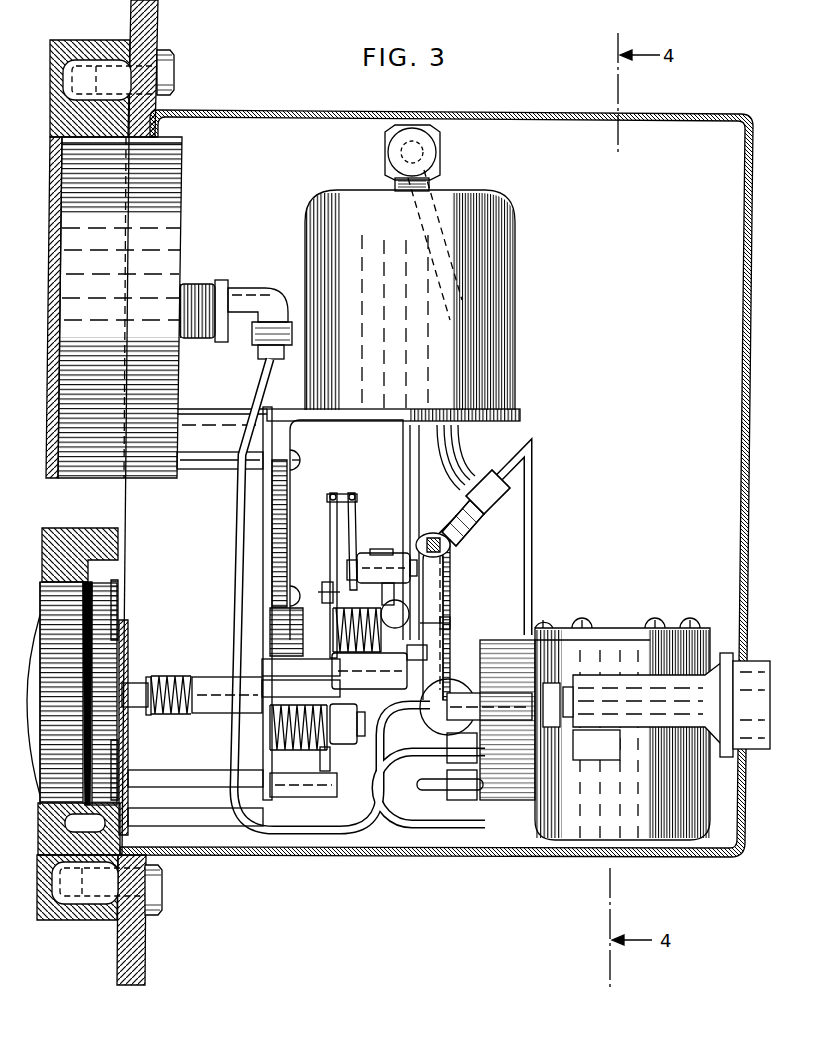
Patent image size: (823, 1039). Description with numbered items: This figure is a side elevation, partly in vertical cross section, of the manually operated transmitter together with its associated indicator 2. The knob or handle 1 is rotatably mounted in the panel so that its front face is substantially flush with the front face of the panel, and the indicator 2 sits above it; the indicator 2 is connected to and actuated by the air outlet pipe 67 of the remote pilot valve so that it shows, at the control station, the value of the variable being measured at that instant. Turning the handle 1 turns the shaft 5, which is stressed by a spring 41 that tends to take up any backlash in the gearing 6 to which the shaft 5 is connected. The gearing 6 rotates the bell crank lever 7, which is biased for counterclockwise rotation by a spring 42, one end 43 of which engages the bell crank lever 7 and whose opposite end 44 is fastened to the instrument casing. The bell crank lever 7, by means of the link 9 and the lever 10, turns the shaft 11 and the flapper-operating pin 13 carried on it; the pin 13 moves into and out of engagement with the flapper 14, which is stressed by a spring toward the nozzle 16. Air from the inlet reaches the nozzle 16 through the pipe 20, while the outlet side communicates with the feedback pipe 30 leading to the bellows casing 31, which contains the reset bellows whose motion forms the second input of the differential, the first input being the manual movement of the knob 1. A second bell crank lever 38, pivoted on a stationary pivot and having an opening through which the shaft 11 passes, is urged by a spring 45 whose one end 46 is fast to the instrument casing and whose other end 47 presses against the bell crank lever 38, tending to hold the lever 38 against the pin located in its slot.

The operating knob 1 is at (38, 746).
The indicator 2 is at (57, 268).
The shaft 5 is at (134, 684).
The gearing 6 is at (347, 744).
The bell crank lever 7 is at (322, 590).
The link 9 is at (330, 530).
The lever 10 is at (356, 516).
The shaft 11 is at (366, 553).
The flapper-operating pin 13 is at (451, 624).
The flapper 14 is at (444, 590).
The nozzle 16 is at (450, 546).
The pipe 20 is at (533, 482).
The feedback pipe 30 is at (450, 245).
The bellows casing 31 is at (498, 245).
The bell crank lever 38 is at (388, 598).
The spring 41 is at (170, 676).
The spring 42 is at (306, 750).
The spring end 43 is at (331, 762).
The spring end 44 is at (270, 656).
The spring 45 is at (356, 612).
The spring end 46 is at (360, 690).
The spring end 47 is at (410, 650).
The air outlet pipe 67 is at (753, 663).